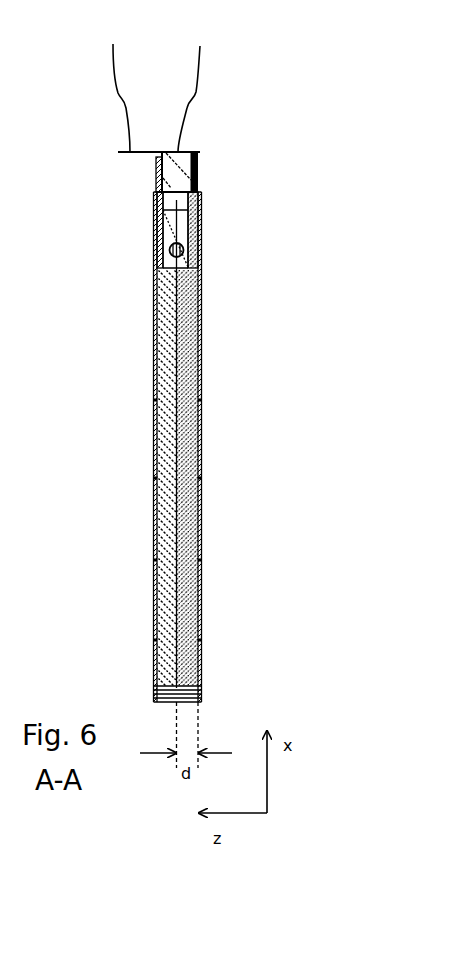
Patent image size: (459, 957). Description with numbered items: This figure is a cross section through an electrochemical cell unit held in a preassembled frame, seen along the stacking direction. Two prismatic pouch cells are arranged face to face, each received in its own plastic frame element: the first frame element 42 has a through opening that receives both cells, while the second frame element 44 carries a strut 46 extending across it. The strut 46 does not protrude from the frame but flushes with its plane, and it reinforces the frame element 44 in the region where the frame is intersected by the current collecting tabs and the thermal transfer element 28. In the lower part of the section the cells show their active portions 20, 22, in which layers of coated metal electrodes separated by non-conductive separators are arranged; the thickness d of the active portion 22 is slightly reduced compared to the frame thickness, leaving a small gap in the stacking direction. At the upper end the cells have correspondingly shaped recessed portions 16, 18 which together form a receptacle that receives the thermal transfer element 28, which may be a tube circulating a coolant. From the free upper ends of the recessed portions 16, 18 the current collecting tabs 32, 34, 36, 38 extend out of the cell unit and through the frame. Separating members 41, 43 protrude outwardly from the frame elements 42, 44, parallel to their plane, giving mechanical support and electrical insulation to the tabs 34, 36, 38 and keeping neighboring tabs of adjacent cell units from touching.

The recessed portion 16 is at (155, 218).
The recessed portion 18 is at (200, 215).
The active portion 20 is at (167, 405).
The active portion 22 is at (185, 463).
The thermal transfer element 28 is at (170, 250).
The current collecting tab 32 is at (117, 87).
The current collecting tab 34 is at (195, 88).
The current collecting tab 36 is at (155, 170).
The current collecting tab 38 is at (200, 170).
The separating member 41 is at (157, 160).
The first frame element 42 is at (153, 500).
The separating member 43 is at (200, 160).
The second frame element 44 is at (200, 512).
The strut 46 is at (215, 243).